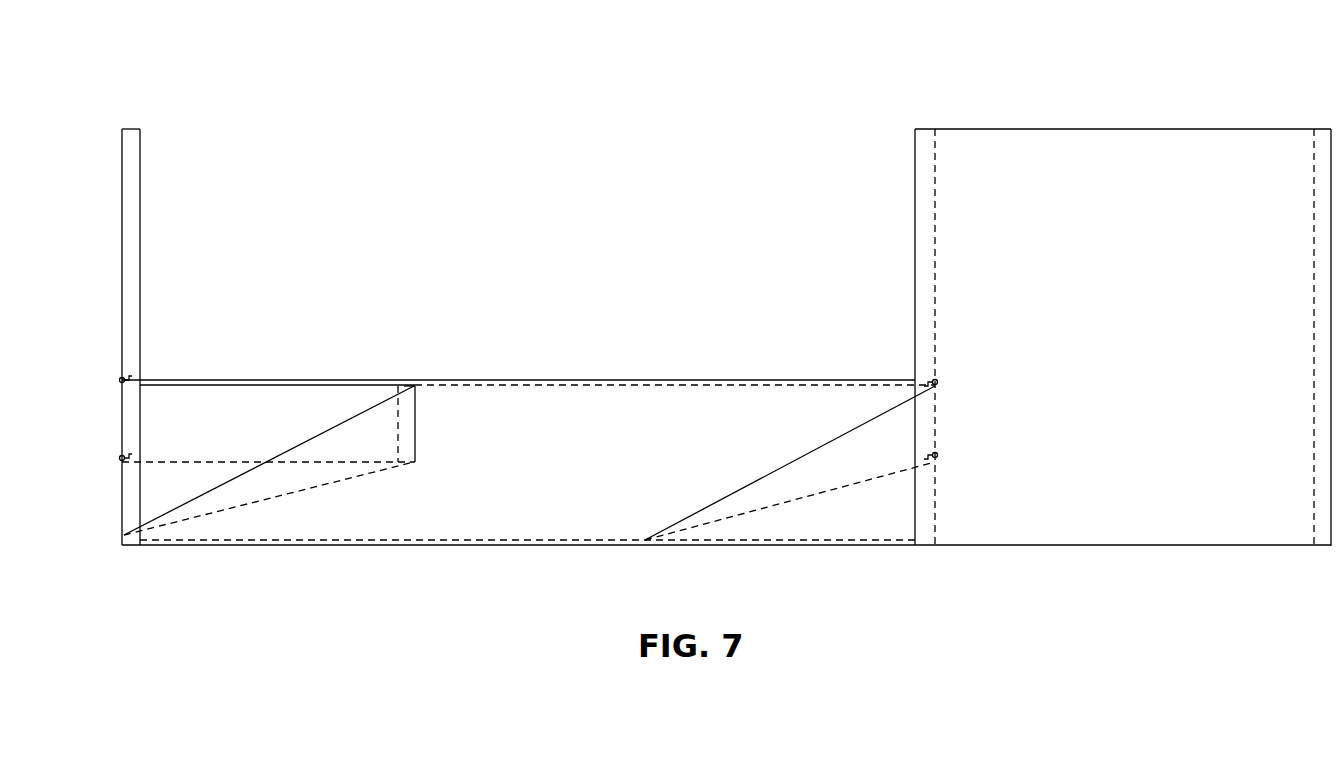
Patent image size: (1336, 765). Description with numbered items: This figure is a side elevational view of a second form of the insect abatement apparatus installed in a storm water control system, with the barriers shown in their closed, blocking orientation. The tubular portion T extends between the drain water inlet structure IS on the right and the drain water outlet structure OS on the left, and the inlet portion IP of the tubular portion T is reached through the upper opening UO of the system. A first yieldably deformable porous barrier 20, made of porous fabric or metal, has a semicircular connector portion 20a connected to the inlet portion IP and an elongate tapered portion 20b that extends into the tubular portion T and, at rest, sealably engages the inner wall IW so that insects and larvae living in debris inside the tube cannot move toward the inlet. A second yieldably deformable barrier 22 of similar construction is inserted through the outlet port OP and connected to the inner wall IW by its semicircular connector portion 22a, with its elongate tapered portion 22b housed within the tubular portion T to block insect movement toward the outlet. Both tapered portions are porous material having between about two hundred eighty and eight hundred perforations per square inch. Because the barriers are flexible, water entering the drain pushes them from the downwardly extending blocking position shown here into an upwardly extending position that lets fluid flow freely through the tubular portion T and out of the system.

The drain water outlet structure OS is at (141, 175).
The outlet port OP is at (122, 418).
The tubular portion T is at (567, 380).
The second yieldably deformable barrier 22 is at (323, 448).
The semicircular connector portion 22a is at (404, 383).
The elongate tapered portion 22b is at (281, 497).
The first yieldably deformable porous barrier 20 is at (845, 458).
The semicircular connector portion 20a is at (935, 440).
The elongate tapered portion 20b is at (792, 503).
The inner wall IW is at (443, 540).
The inlet portion IP is at (915, 305).
The drain water inlet structure IS is at (1093, 129).
The upper opening UO is at (1013, 112).